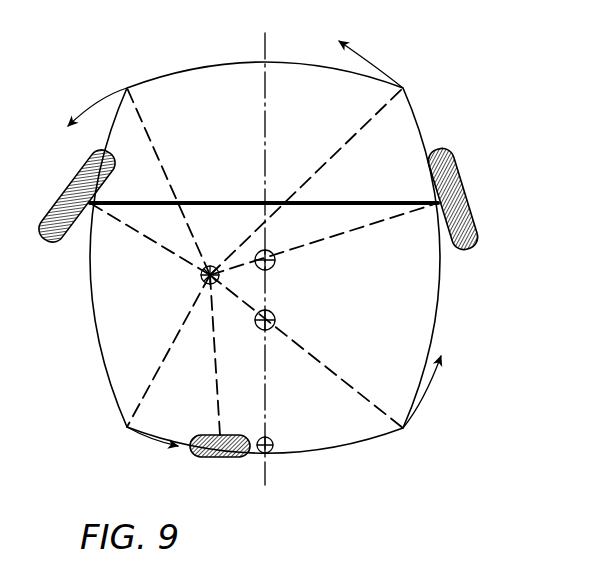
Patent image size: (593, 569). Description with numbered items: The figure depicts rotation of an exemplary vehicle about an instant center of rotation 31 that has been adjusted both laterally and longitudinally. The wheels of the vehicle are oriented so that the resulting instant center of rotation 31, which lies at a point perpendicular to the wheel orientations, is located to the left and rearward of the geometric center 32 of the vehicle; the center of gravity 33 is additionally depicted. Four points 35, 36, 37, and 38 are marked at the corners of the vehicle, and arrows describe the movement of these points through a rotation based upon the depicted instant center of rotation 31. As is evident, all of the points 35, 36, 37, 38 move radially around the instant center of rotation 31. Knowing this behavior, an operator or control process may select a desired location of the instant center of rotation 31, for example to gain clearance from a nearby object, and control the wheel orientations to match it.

The instant center of rotation 31 is at (216, 284).
The geometric center 32 is at (275, 262).
The center of gravity 33 is at (267, 330).
The point 35 is at (127, 88).
The point 36 is at (403, 88).
The point 37 is at (403, 428).
The point 38 is at (127, 427).